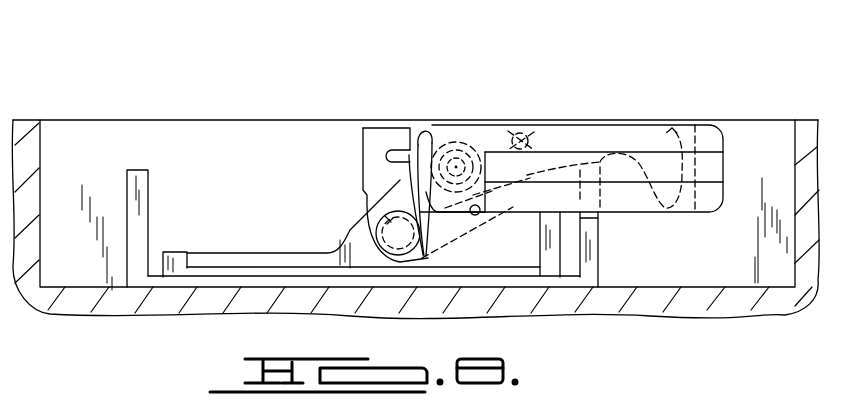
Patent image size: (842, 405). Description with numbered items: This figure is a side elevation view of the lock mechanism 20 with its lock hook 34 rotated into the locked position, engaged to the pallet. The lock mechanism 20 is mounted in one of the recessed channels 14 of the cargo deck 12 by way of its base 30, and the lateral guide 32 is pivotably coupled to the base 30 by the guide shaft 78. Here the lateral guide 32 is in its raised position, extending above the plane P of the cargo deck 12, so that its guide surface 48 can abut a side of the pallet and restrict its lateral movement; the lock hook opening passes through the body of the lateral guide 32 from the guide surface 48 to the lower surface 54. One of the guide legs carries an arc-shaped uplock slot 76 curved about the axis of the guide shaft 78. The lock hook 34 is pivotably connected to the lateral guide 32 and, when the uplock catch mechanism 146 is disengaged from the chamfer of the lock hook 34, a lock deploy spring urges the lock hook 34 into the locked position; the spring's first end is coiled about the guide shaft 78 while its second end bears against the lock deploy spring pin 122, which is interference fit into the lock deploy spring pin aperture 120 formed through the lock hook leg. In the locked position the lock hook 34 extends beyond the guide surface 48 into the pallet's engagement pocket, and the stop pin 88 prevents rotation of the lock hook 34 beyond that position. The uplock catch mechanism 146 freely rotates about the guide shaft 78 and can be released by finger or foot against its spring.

The cargo deck 12 is at (30, 120).
The recessed channel 14 is at (137, 170).
The plane of cargo deck P is at (228, 120).
The lock mechanism 20 is at (548, 62).
The base 30 is at (200, 256).
The lateral guide 32 is at (369, 134).
The lock hook 34 is at (684, 122).
The guide surface 48 is at (649, 220).
The lower surface 54 is at (358, 177).
The uplock slot 76 is at (394, 150).
The guide shaft 78 is at (396, 246).
The stop pin 88 is at (481, 205).
The lock deploy spring pin aperture 120 is at (555, 132).
The lock deploy spring pin 122 is at (525, 135).
The uplock catch mechanism 146 is at (410, 190).